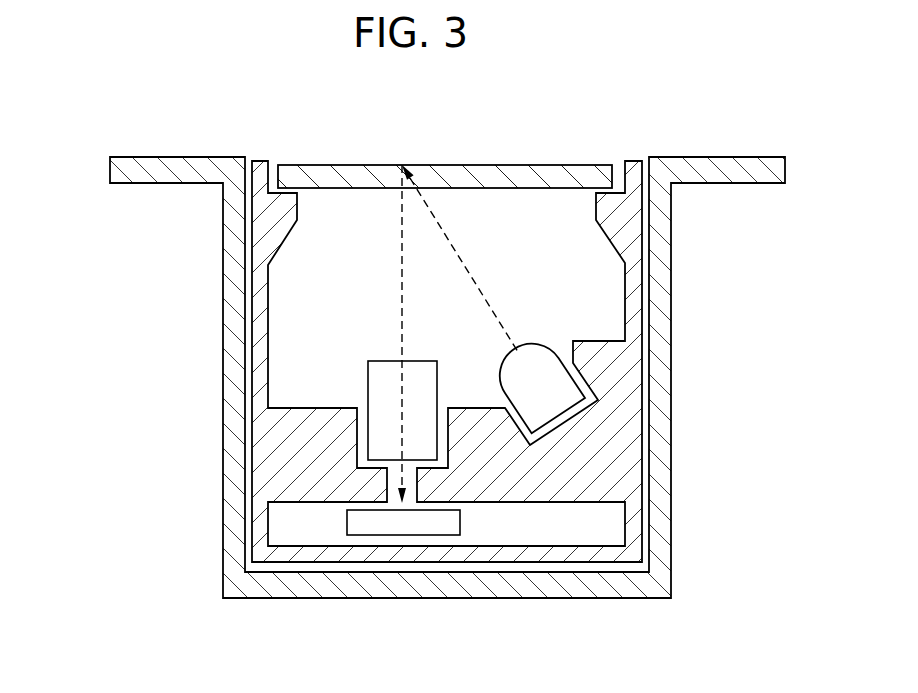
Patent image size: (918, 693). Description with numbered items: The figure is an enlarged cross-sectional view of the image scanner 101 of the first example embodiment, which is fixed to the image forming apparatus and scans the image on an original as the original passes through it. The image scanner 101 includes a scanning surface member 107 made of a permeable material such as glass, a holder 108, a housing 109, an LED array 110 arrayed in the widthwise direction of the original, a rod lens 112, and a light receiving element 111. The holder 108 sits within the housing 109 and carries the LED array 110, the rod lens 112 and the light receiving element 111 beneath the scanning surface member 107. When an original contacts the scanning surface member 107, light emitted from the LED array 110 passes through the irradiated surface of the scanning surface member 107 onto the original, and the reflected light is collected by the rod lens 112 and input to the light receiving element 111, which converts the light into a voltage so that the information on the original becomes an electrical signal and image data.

The image scanner 101 is at (288, 124).
The scanning surface member 107 is at (512, 165).
The holder 108 is at (560, 477).
The housing 109 is at (223, 458).
The LED array 110 is at (557, 402).
The light receiving element 111 is at (393, 523).
The rod lens 112 is at (378, 380).